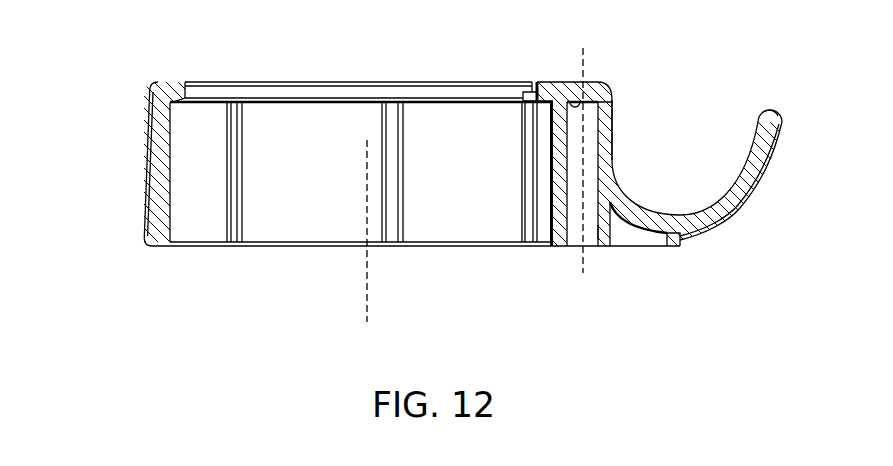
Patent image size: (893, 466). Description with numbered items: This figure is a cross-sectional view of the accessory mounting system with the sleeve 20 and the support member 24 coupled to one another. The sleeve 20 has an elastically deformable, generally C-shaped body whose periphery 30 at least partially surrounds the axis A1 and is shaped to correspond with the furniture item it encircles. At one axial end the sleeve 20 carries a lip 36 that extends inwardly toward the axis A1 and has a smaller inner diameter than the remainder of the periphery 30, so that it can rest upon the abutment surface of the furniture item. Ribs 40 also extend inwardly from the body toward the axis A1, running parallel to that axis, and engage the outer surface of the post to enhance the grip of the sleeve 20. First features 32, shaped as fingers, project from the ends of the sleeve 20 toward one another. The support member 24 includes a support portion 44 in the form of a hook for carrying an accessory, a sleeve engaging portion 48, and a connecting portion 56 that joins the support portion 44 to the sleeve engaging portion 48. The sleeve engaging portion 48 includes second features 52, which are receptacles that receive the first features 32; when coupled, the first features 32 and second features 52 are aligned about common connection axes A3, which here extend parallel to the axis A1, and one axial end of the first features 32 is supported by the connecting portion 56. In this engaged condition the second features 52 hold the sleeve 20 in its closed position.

The sleeve 20 is at (462, 83).
The support member 24 is at (713, 233).
The periphery 30 is at (148, 172).
The first features 32 is at (592, 123).
The lip 36 is at (316, 97).
The ribs 40 is at (390, 133).
The support portion 44 is at (748, 143).
The sleeve engaging portion 48 is at (578, 193).
The second features 52 is at (598, 229).
The connecting portion 56 is at (575, 102).
The axis A1 is at (367, 302).
The connection axes A3 is at (562, 82).